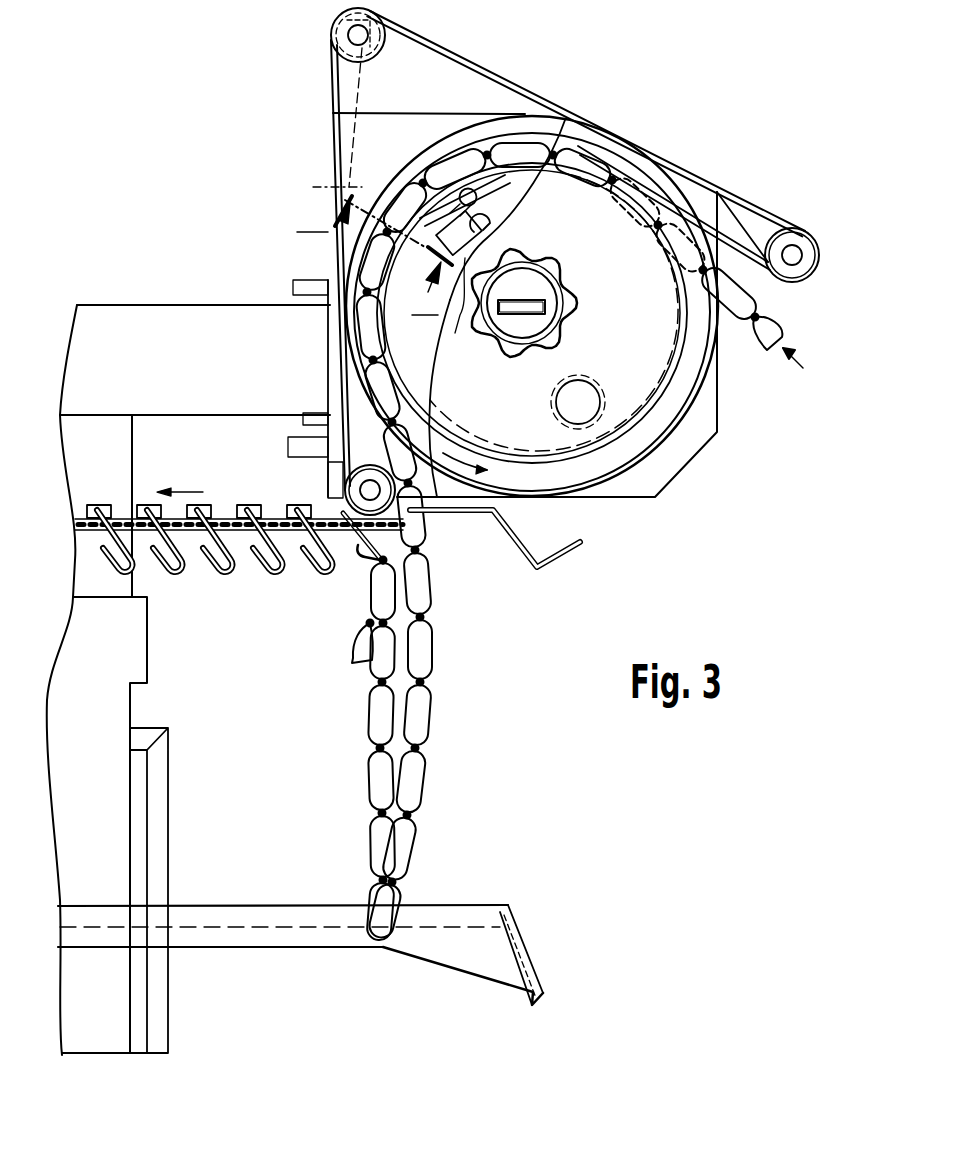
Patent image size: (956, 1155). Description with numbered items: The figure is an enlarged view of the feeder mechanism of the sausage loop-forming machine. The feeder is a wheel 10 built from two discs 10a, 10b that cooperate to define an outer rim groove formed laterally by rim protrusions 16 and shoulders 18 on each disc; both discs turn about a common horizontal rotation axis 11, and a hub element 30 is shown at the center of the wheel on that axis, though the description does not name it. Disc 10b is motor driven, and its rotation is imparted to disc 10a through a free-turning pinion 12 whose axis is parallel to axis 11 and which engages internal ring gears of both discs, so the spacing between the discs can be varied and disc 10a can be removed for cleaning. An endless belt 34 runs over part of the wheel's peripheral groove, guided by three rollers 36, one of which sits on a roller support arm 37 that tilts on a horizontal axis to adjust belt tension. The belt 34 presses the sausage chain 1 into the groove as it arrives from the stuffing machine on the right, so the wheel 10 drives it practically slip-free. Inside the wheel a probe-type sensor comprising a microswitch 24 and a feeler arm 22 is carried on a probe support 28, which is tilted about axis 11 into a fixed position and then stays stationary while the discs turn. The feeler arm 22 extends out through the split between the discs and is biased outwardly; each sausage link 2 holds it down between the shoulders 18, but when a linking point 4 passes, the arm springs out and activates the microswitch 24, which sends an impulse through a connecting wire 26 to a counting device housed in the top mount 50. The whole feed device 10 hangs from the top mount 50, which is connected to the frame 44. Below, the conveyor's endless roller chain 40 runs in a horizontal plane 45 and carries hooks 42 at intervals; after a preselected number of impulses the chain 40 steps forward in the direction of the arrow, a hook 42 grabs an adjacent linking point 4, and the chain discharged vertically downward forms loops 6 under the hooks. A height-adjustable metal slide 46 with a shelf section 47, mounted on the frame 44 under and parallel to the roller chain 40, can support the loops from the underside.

The sausage chain 1 is at (430, 652).
The sausage link 2 is at (738, 297).
The linking point 4 is at (760, 320).
The loop 6 is at (435, 737).
The wheel 10 is at (702, 389).
The wheel disc 10a is at (538, 430).
The wheel disc 10b is at (425, 398).
The rotation axis 11 is at (527, 305).
The pinion 12 is at (578, 390).
The rim protrusion 16 is at (537, 470).
The shoulder 18 is at (412, 390).
The feeler arm 22 is at (412, 248).
The microswitch 24 is at (465, 322).
The connecting wire 26 is at (497, 215).
The probe support 28 is at (483, 242).
The hub knob 30 is at (557, 320).
The endless belt 34 is at (467, 63).
The roller 36 is at (346, 22).
The roller support arm 37 is at (743, 240).
The roller chain 40 is at (188, 537).
The hook 42 is at (280, 567).
The frame 44 is at (93, 732).
The horizontal plane 45 is at (78, 525).
The metal slide 46 is at (252, 940).
The shelf section 47 is at (480, 943).
The top mount 50 is at (162, 364).